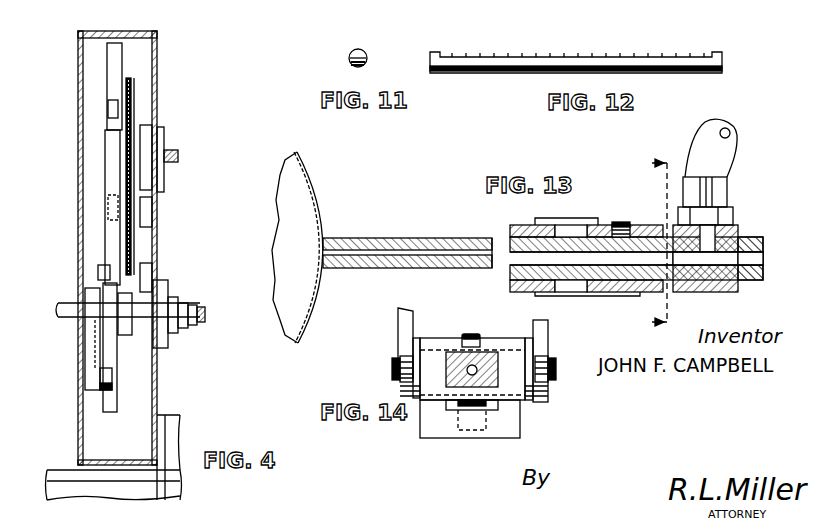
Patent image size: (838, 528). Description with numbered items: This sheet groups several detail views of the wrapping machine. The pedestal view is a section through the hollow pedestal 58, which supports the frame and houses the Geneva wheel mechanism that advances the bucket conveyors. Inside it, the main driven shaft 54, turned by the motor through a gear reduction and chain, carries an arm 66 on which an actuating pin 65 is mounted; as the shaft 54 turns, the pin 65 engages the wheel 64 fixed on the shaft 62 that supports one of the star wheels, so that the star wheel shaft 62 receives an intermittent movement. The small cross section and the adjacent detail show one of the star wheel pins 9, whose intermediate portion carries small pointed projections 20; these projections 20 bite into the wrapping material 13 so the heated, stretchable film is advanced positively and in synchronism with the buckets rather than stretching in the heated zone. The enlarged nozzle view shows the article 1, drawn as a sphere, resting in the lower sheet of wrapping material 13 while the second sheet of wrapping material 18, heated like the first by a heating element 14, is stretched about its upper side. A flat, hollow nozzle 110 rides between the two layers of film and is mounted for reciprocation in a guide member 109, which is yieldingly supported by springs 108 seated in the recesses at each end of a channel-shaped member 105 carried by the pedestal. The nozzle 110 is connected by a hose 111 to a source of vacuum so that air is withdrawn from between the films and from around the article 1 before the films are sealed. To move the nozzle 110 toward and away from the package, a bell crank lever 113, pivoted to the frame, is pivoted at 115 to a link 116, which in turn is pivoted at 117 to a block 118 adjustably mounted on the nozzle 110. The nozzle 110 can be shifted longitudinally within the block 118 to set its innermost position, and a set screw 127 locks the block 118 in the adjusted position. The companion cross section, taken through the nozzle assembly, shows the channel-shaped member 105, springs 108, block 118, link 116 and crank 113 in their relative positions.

In FIG. 13, the article 1 is at (300, 197).
In FIG. 11, the pins 9 is at (350, 55).
In FIG. 12, the pins 9 is at (438, 52).
In FIG. 13, the wrapping material 13 is at (298, 340).
In FIG. 13, the heating element 14 is at (647, 242).
In FIG. 13, the wrapping material 18 is at (323, 218).
In FIG. 11, the pointed projections 20 is at (362, 52).
In FIG. 12, the pointed projections 20 is at (625, 57).
In FIG. 4, the shaft 54 is at (200, 312).
In FIG. 4, the pedestal 58 is at (157, 58).
In FIG. 4, the shaft 62 is at (178, 156).
In FIG. 4, the wheel 64 is at (107, 62).
In FIG. 4, the actuating pin 65 is at (105, 392).
In FIG. 4, the arm 66 is at (95, 352).
In FIG. 14, the channel-shaped member 105 is at (428, 425).
In FIG. 14, the springs 108 is at (476, 410).
In FIG. 13, the guide member 109 is at (510, 225).
In FIG. 13, the nozzle 110 is at (432, 252).
In FIG. 14, the nozzle 110 is at (482, 362).
In FIG. 13, the hose 111 is at (735, 134).
In FIG. 14, the bell crank lever 113 is at (406, 318).
In FIG. 14, the pivot 115 is at (394, 368).
In FIG. 13, the link 116 is at (562, 292).
In FIG. 14, the link 116 is at (416, 338).
In FIG. 13, the pivot 117 is at (618, 265).
In FIG. 14, the pivot 117 is at (405, 358).
In FIG. 13, the block 118 is at (598, 228).
In FIG. 14, the block 118 is at (515, 397).
In FIG. 13, the set screw 127 is at (630, 205).
In FIG. 14, the set screw 127 is at (468, 336).